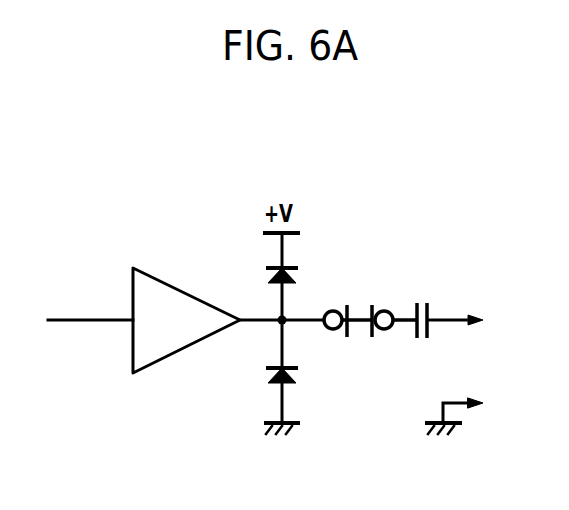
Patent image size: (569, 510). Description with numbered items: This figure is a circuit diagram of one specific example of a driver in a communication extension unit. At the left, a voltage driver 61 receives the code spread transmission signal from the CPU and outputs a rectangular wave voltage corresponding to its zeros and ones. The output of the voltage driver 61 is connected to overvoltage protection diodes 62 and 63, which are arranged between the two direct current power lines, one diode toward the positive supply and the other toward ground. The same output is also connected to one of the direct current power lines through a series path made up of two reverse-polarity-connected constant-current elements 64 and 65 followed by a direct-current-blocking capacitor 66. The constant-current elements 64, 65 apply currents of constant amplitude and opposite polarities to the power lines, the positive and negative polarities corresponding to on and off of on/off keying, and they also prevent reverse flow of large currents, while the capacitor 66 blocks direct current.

The voltage driver 61 is at (200, 300).
The overvoltage protection diode 62 is at (270, 268).
The overvoltage protection diode 63 is at (270, 368).
The constant-current element 64 is at (347, 305).
The constant-current element 65 is at (372, 305).
The direct-current-blocking capacitor 66 is at (432, 312).